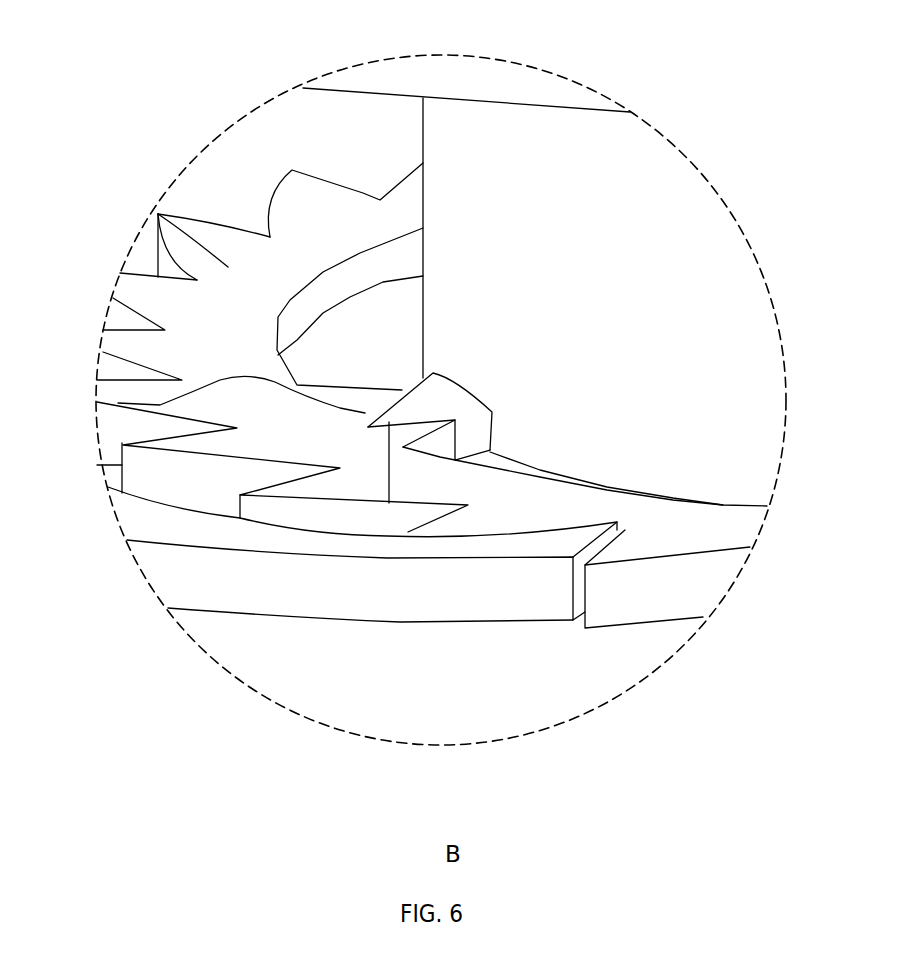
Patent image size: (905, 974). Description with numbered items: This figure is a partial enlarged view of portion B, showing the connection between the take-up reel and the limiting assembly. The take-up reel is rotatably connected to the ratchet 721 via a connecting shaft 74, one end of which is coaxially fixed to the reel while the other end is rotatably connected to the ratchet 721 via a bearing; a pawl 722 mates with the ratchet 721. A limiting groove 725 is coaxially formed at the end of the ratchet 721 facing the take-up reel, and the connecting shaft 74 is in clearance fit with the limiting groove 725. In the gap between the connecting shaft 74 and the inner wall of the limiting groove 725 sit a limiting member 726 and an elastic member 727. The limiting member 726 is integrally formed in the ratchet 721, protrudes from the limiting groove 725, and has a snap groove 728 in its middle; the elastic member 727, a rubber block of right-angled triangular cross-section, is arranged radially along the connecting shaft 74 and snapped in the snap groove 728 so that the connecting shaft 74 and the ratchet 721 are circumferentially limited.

The connecting shaft 74 is at (533, 233).
The ratchet 721 is at (163, 269).
The pawl 722 is at (255, 590).
The limiting groove 725 is at (403, 298).
The limiting member 726 is at (238, 454).
The elastic member 727 is at (434, 395).
The snap groove 728 is at (389, 503).